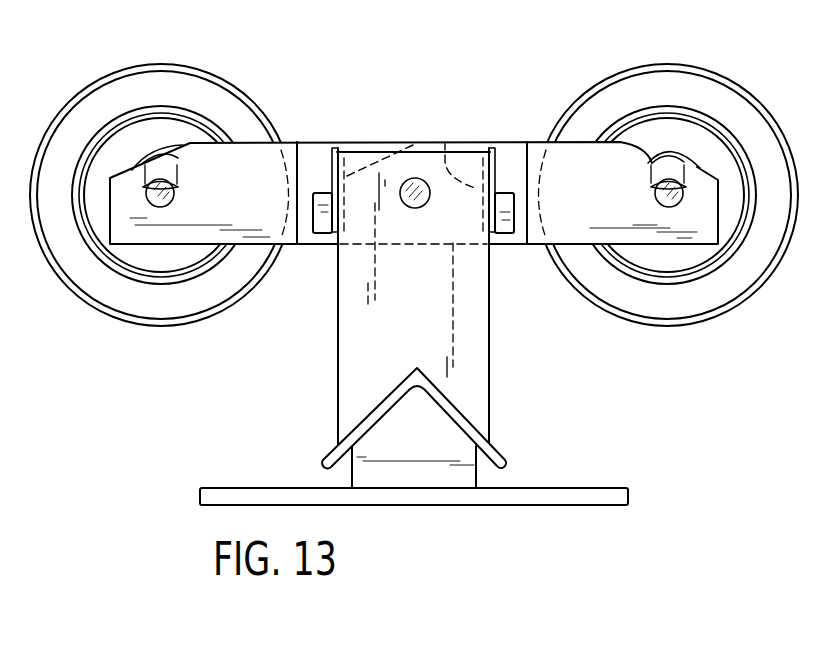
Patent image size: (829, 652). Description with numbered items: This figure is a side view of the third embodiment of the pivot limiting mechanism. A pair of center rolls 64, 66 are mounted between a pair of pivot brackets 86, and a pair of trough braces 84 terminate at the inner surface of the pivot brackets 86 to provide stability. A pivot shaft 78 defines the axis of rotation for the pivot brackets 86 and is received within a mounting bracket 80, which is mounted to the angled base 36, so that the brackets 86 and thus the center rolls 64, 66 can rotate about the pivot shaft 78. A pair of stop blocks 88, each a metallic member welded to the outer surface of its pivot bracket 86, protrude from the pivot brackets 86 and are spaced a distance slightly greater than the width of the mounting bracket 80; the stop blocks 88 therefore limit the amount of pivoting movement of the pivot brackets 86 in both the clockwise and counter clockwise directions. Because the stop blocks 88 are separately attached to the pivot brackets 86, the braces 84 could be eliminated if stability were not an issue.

The center roll 64 is at (121, 97).
The center roll 66 is at (635, 93).
The pivot bracket 86 is at (513, 160).
The stop block 88 is at (316, 188).
The trough brace 84 is at (445, 142).
The pivot shaft 78 is at (415, 208).
The mounting bracket 80 is at (403, 354).
The angled base 36 is at (502, 453).